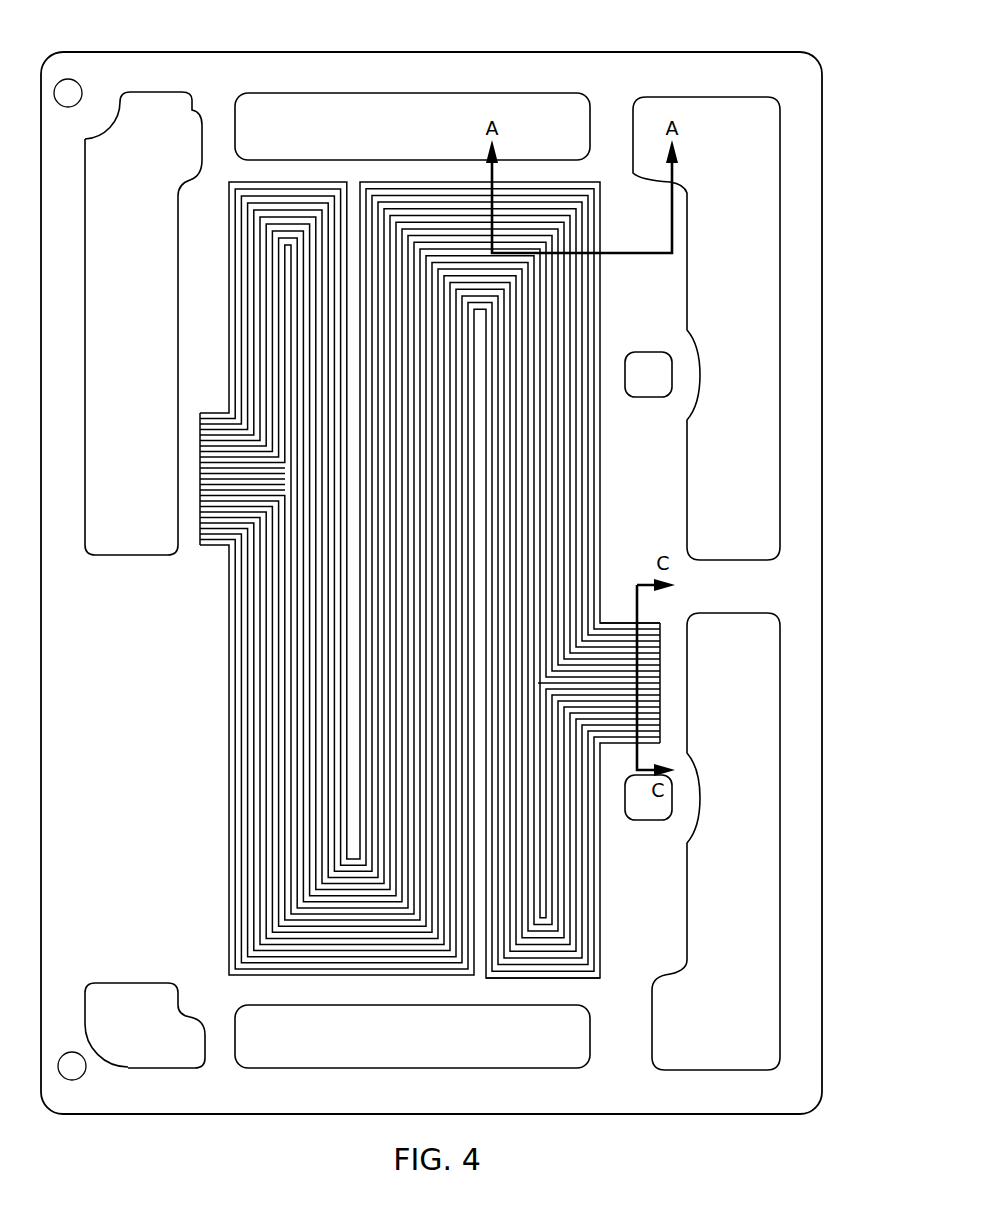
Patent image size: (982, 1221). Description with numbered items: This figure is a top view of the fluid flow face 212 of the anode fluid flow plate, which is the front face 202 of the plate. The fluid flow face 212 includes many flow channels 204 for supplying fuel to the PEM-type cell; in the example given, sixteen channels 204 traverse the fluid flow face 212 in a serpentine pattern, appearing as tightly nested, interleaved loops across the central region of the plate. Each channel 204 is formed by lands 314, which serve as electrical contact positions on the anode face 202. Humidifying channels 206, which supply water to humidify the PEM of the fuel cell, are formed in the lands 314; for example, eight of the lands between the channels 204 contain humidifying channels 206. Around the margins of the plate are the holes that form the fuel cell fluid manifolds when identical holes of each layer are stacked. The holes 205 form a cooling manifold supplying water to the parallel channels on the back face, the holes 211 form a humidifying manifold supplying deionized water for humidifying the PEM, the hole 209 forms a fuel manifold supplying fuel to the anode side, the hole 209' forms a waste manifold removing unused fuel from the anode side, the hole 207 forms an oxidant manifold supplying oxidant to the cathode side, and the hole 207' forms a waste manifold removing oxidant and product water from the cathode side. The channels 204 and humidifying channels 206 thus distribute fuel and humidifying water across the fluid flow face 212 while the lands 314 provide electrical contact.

The front face 202 is at (807, 83).
The flow channel 204 is at (657, 625).
The hole 205 is at (424, 122).
The humidifying channel 206 is at (620, 627).
The hole 207 is at (756, 328).
The hole 207' is at (147, 1065).
The hole 209 is at (764, 841).
The hole 209' is at (155, 287).
The hole 211 is at (660, 378).
The fluid flow face 212 is at (582, 343).
The land 314 is at (662, 660).